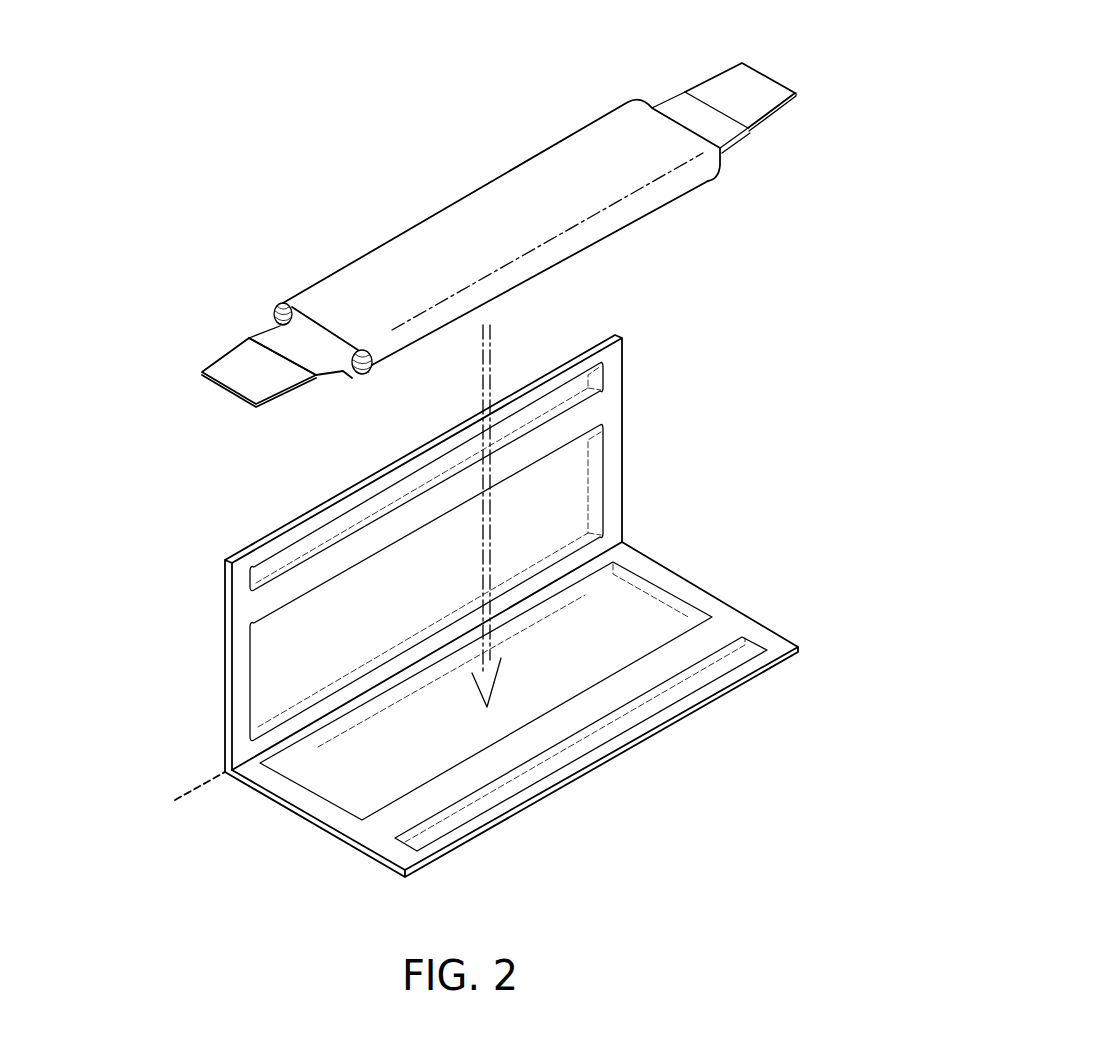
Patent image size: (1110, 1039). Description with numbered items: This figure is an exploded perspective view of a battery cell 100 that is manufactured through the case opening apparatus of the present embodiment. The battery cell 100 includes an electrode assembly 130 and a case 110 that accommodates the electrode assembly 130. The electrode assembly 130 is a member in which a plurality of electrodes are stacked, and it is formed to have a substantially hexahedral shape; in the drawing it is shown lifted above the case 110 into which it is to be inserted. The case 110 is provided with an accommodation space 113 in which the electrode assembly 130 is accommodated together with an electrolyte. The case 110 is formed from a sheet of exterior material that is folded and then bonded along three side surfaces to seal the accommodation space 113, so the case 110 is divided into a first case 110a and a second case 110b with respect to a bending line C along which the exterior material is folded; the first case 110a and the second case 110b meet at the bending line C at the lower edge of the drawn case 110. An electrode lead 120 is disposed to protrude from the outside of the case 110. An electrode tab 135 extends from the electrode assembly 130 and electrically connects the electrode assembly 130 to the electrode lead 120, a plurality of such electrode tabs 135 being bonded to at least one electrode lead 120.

The battery cell 100 is at (437, 66).
The case 110 is at (638, 493).
The first case 110a is at (570, 423).
The second case 110b is at (660, 663).
The accommodation space 113 is at (528, 518).
The electrode lead 120 is at (720, 82).
The electrode assembly 130 is at (445, 193).
The electrode tab 135 is at (313, 327).
The bending line C is at (172, 800).